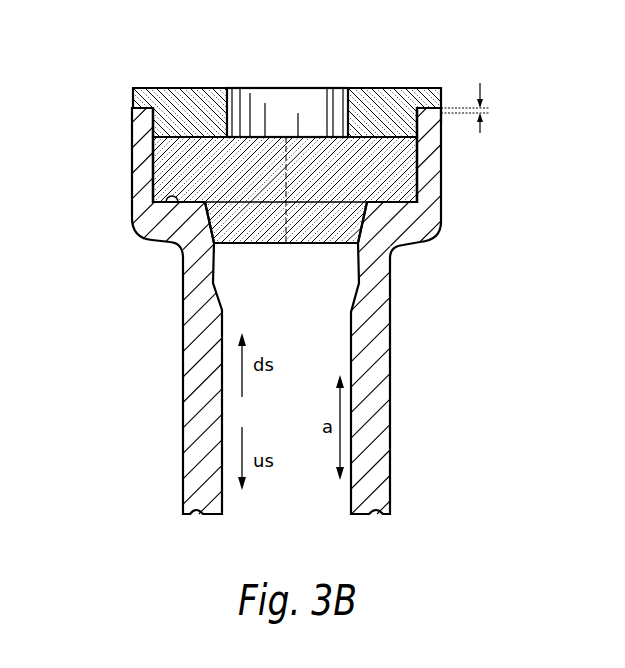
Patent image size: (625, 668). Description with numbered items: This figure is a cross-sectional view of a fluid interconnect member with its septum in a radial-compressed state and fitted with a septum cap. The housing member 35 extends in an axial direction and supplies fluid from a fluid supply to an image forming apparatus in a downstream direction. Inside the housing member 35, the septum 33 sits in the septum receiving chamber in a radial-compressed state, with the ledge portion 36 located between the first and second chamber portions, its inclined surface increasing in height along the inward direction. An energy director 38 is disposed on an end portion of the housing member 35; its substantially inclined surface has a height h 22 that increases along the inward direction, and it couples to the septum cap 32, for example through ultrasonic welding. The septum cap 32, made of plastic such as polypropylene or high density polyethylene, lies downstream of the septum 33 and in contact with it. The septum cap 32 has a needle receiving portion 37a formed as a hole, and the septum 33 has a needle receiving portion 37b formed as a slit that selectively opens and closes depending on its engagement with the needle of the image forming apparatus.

The height h22 of ledge above inner wall 22 is at (489, 108).
The septum cap 32 is at (121, 90).
The septum 33 is at (166, 200).
The housing member 35 is at (378, 325).
The ledge portion 36 is at (166, 203).
The needle receiving portion 37a is at (287, 98).
The needle receiving portion 37b is at (285, 169).
The energy director 38 is at (440, 112).